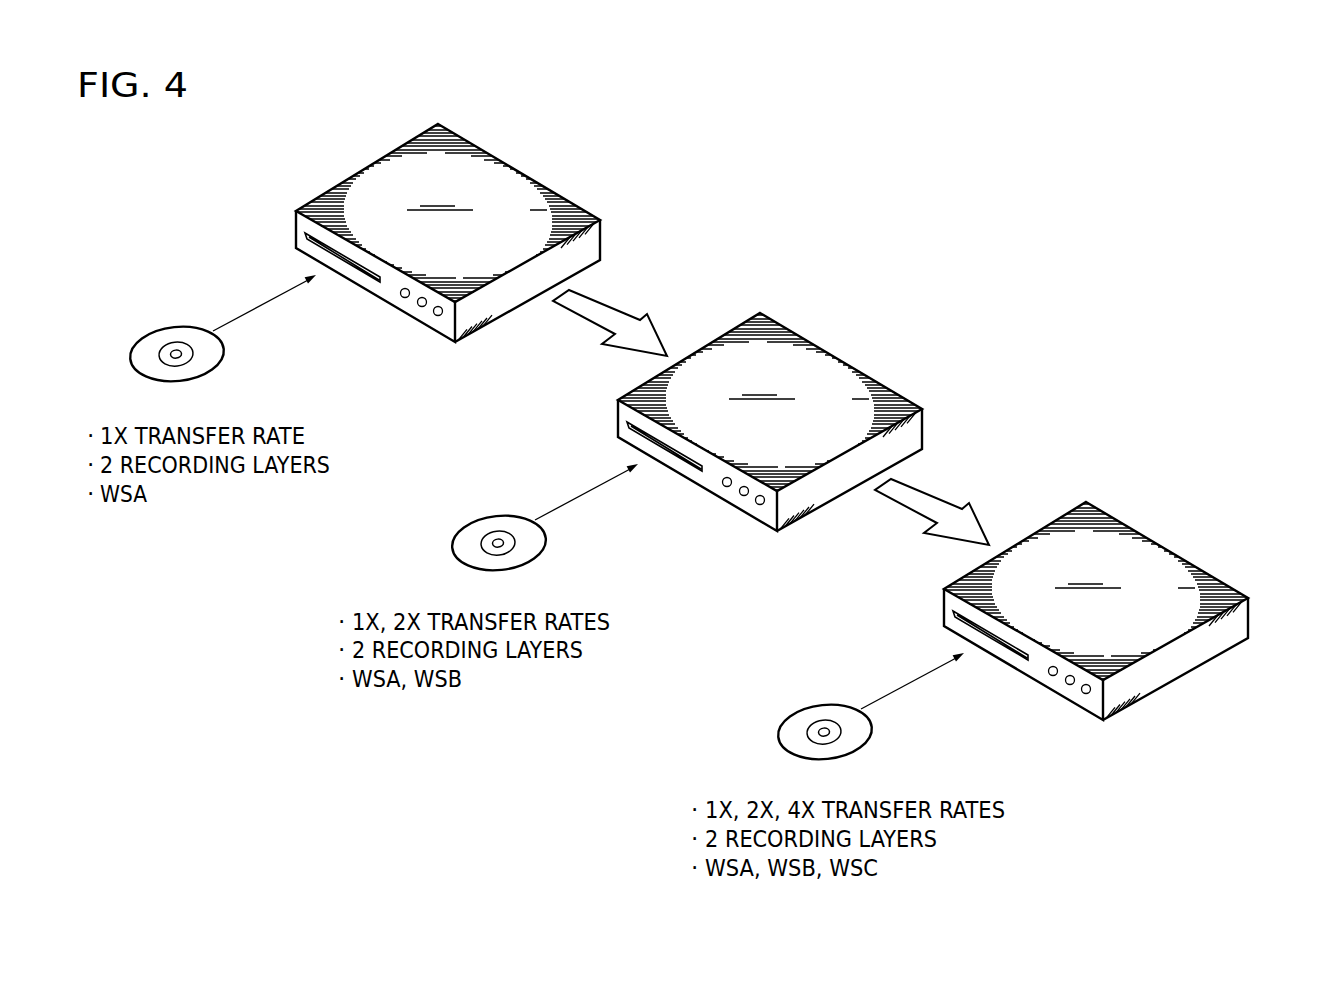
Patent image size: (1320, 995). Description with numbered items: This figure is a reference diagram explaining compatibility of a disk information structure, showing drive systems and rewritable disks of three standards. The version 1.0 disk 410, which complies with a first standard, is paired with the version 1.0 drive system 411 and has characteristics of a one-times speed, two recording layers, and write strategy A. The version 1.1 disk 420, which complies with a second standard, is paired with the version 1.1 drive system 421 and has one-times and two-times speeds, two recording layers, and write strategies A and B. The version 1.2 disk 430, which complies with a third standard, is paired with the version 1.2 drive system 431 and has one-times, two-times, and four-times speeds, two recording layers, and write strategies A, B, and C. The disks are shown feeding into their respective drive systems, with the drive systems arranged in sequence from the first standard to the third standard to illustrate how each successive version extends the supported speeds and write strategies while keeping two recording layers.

The version 1.0 drive system 411 is at (474, 219).
The version 1.1 drive system 421 is at (815, 405).
The version 1.2 drive system 431 is at (1117, 594).
The version 1.0 disk 410 is at (206, 346).
The version 1.1 disk 420 is at (497, 535).
The version 1.2 disk 430 is at (850, 722).